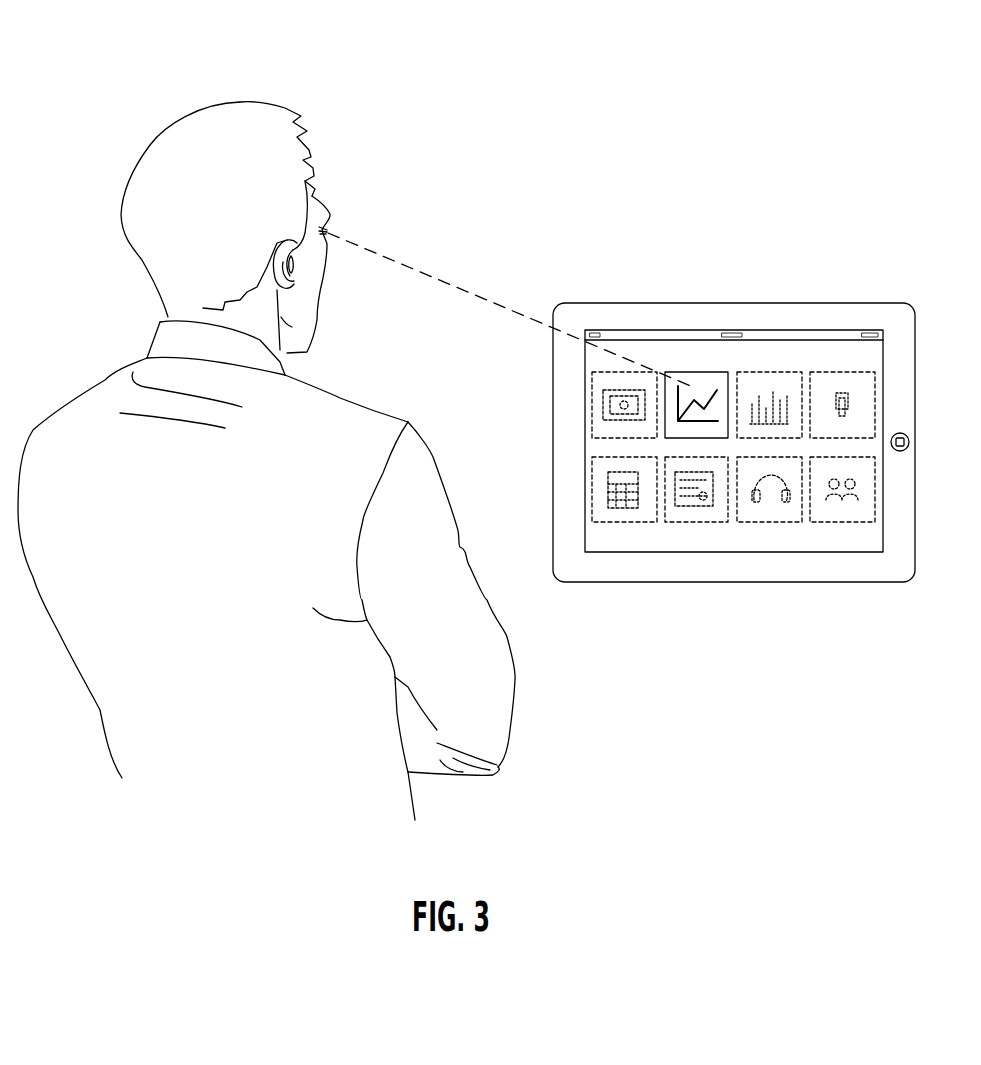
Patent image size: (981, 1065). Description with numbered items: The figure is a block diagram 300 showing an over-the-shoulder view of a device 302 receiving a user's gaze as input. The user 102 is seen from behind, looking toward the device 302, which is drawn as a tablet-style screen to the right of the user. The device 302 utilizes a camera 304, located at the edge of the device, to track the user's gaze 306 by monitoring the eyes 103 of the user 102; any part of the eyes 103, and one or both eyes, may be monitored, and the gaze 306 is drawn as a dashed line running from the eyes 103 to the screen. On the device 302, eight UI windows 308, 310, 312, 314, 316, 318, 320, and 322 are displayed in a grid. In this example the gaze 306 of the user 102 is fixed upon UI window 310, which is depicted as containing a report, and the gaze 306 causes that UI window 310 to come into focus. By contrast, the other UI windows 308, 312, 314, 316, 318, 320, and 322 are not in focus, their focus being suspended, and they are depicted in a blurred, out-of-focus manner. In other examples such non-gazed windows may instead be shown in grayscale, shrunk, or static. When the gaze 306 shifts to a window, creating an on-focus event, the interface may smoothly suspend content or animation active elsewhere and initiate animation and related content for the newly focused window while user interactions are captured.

The block diagram 300 is at (805, 60).
The user 102 is at (172, 127).
The eyes 103 is at (326, 228).
The gaze 306 is at (472, 297).
The device 302 is at (612, 303).
The camera 304 is at (900, 433).
The UI window 308 is at (592, 400).
The UI window 310 is at (695, 372).
The UI window 312 is at (770, 372).
The UI window 314 is at (842, 372).
The UI window 316 is at (592, 495).
The UI window 318 is at (698, 523).
The UI window 320 is at (772, 523).
The UI window 322 is at (845, 523).